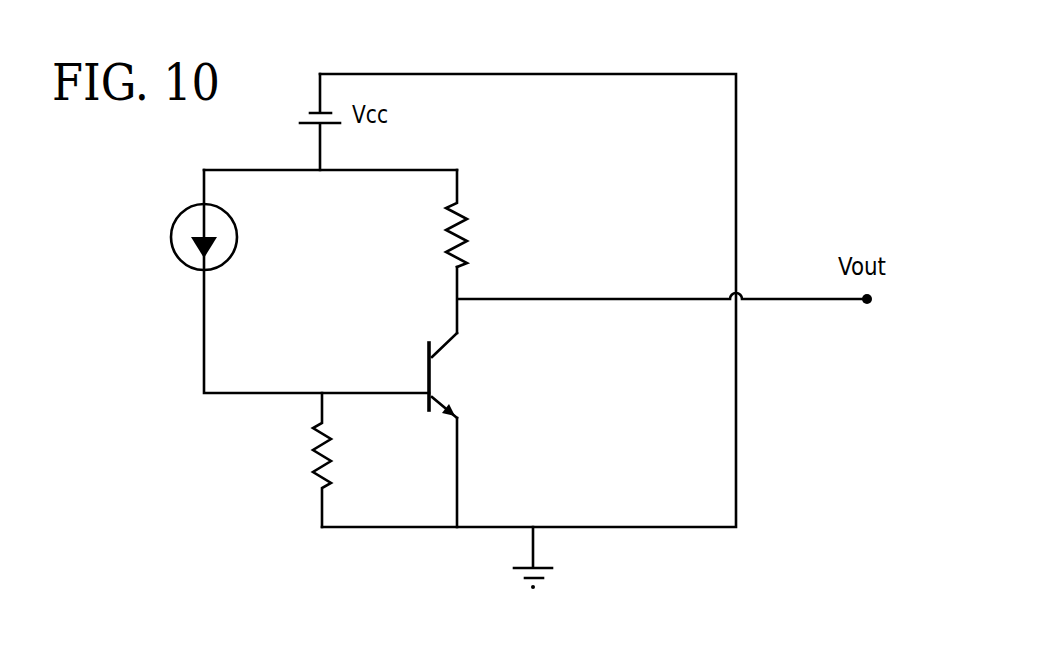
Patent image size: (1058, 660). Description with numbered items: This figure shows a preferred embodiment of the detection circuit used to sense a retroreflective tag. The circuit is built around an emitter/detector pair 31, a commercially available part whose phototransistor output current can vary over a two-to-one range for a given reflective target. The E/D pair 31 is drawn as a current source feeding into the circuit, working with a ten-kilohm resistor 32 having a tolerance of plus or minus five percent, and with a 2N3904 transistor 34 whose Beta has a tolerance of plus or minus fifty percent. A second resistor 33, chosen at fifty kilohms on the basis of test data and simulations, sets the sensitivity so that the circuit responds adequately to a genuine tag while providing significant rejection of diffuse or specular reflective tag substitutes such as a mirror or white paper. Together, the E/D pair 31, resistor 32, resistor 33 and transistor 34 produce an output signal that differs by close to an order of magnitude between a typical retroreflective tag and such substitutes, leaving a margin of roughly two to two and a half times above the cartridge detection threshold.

The E/D pair 31 is at (235, 223).
The resistor 32 is at (461, 215).
The resistor 33 is at (315, 468).
The transistor 34 is at (428, 353).